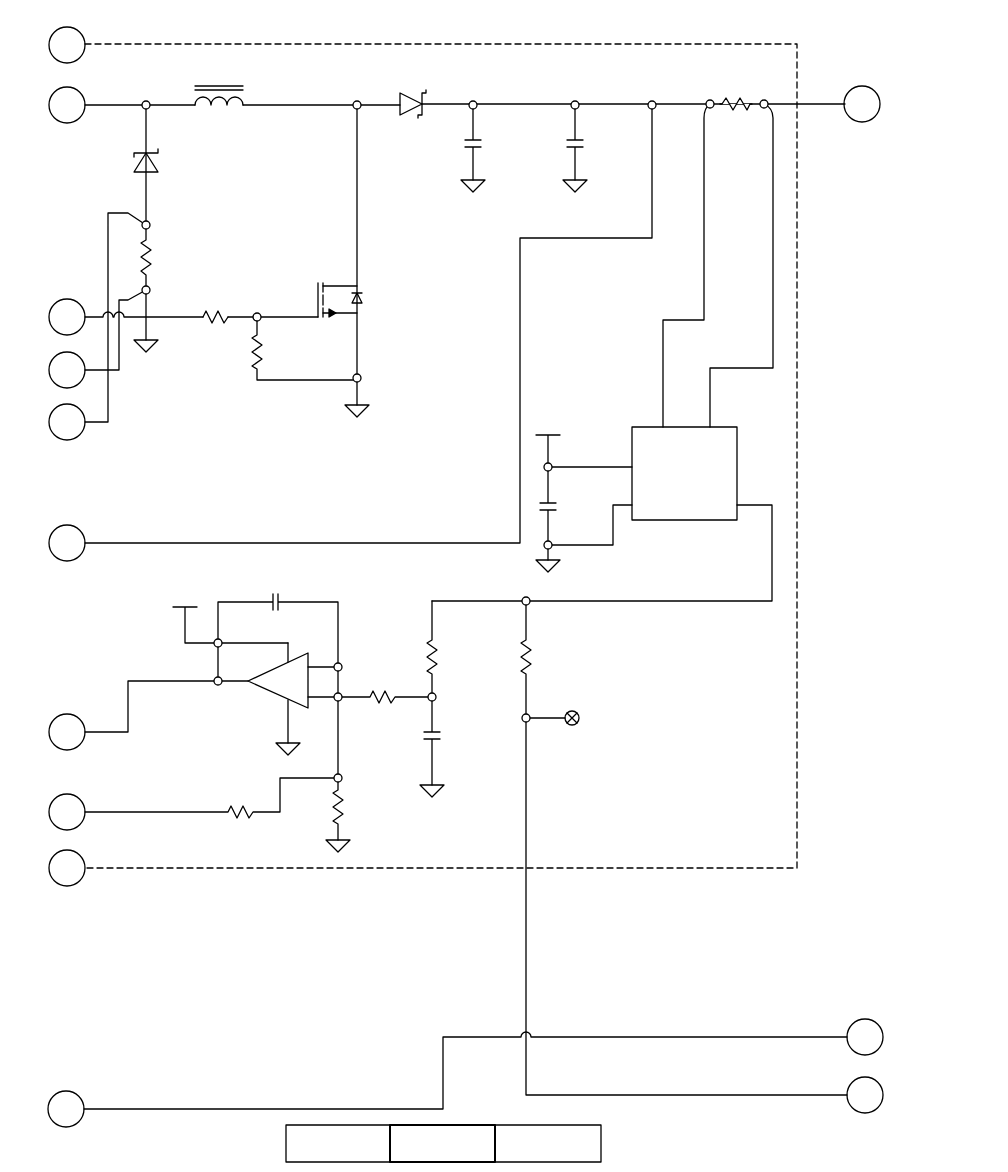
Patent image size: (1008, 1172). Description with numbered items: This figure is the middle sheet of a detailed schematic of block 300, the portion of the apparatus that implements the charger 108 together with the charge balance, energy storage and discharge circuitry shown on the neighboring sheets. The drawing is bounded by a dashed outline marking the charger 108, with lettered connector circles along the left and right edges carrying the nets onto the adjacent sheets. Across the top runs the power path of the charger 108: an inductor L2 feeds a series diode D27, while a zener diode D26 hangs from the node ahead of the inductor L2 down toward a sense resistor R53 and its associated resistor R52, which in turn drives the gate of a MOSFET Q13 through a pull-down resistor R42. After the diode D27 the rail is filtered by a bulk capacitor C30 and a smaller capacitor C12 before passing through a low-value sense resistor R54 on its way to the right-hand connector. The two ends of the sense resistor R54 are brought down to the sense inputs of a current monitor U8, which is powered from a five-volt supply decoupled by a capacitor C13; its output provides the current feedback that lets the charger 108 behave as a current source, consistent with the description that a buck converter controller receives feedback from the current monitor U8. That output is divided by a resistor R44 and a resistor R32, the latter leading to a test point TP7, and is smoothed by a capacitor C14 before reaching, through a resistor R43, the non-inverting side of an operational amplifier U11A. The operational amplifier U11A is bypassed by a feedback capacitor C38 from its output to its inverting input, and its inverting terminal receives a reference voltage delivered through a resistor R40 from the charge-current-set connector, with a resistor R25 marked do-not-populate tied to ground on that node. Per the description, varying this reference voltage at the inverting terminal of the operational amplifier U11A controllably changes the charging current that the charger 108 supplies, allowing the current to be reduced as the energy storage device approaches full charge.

The block 300 is at (195, 40).
The charger 108 is at (322, 44).
The inductor L2 22u L2 is at (219, 99).
The zener diode D26 V15PN50 D26 is at (198, 165).
The diode D27 V15PN50 D27 is at (415, 107).
The capacitor C30 10u 25V C30 is at (513, 148).
The capacitor C12 100n C12 is at (593, 148).
The sense resistor R54 10m R54 is at (734, 107).
The resistor R53 25m R53 is at (168, 257).
The resistor R52 15R R52 is at (212, 321).
The resistor R42 10K R42 is at (304, 348).
The MOSFET Q13 BSZ100N06 Q13 is at (406, 261).
The current monitor U8 is at (664, 440).
The capacitor C13 100n C13 is at (580, 493).
The resistor R44 10K R44 is at (452, 649).
The resistor R43 10k R43 is at (385, 700).
The capacitor C14 10n C14 is at (447, 747).
The resistor R32 1K R32 is at (684, 848).
The test point TP7 is at (598, 732).
The operational amplifier U11A is at (205, 670).
The capacitor C38 22n C38 is at (278, 675).
The resistor R25 DNP R25 is at (356, 815).
The resistor R40 10k R40 is at (211, 810).